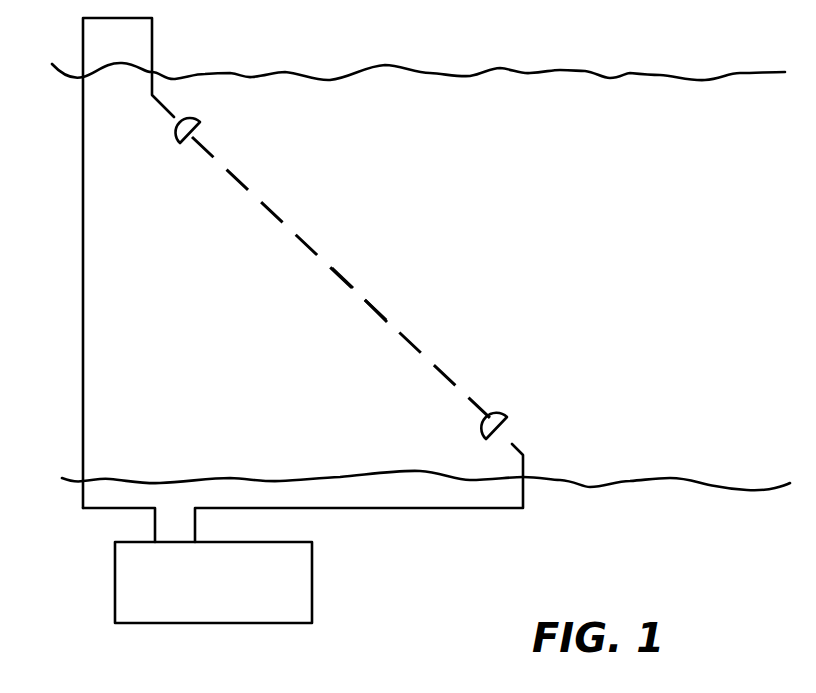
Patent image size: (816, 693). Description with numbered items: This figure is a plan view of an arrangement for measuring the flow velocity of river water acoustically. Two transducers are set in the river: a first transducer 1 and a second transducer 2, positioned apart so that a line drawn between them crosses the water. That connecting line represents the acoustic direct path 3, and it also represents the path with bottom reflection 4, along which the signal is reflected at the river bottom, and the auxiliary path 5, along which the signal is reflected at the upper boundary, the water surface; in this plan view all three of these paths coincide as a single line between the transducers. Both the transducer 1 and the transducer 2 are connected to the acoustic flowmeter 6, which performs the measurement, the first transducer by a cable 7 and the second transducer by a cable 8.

The transducer 1 is at (177, 127).
The transducer 2 is at (508, 423).
The direct path 3 is at (310, 243).
The path with bottom reflection 4 is at (340, 270).
The auxiliary path, upper boundary reflection 5 is at (367, 297).
The acoustic flowmeter 6 is at (290, 583).
The cable to transducer 1 7 is at (83, 330).
The cable to transducer 2 8 is at (460, 512).